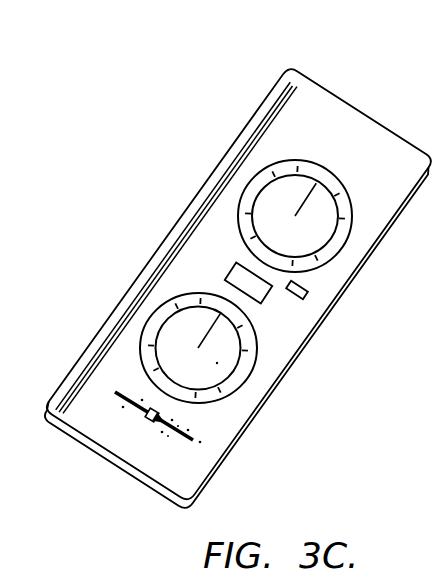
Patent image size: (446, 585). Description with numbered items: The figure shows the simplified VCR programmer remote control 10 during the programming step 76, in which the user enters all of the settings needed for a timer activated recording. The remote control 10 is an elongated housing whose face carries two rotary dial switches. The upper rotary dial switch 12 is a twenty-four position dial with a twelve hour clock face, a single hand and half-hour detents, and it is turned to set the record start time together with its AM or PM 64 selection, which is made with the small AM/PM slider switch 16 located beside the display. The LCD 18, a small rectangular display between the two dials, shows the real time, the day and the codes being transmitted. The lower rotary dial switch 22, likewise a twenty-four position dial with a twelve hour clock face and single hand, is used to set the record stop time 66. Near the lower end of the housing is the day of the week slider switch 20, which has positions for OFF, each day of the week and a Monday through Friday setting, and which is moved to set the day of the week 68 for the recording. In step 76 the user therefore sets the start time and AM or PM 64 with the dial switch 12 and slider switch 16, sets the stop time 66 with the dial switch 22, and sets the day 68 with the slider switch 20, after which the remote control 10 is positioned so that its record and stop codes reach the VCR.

The step 76 is at (364, 46).
The VCR programmer remote control 10 is at (333, 113).
The rotary dial switch 12 is at (317, 222).
The rotary dial switch 22 is at (225, 360).
The LCD 18 is at (267, 298).
The AM/PM slider switch 16 is at (305, 292).
The day of the week slider switch 20 is at (197, 442).
The AM or PM 64 is at (248, 166).
The record stop time 66 is at (158, 285).
The day of the week 68 is at (92, 376).